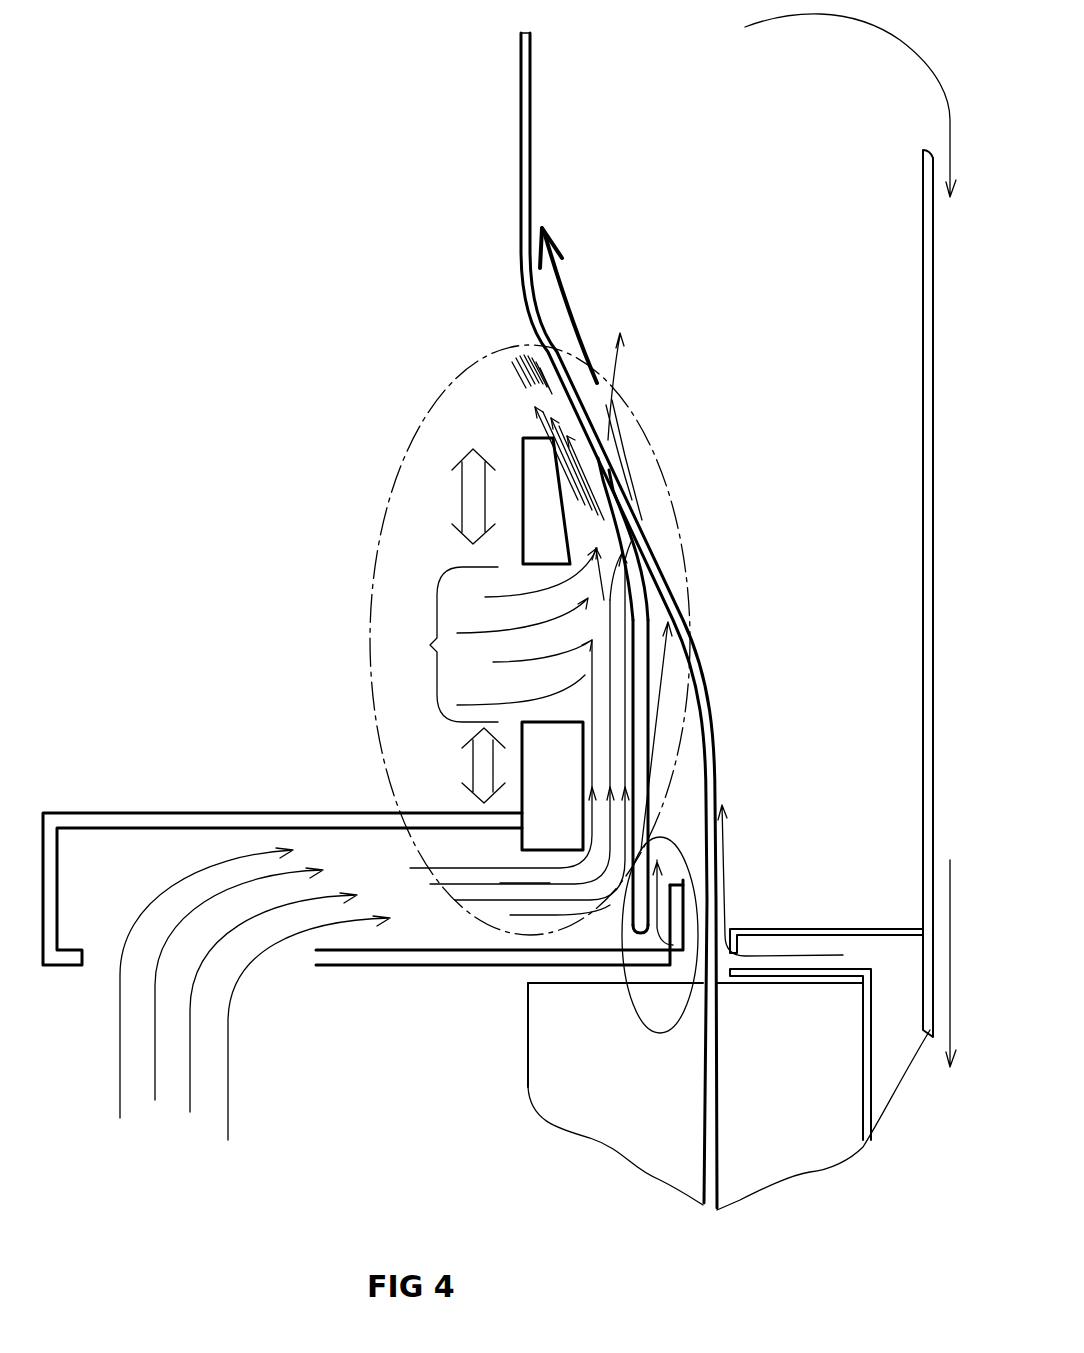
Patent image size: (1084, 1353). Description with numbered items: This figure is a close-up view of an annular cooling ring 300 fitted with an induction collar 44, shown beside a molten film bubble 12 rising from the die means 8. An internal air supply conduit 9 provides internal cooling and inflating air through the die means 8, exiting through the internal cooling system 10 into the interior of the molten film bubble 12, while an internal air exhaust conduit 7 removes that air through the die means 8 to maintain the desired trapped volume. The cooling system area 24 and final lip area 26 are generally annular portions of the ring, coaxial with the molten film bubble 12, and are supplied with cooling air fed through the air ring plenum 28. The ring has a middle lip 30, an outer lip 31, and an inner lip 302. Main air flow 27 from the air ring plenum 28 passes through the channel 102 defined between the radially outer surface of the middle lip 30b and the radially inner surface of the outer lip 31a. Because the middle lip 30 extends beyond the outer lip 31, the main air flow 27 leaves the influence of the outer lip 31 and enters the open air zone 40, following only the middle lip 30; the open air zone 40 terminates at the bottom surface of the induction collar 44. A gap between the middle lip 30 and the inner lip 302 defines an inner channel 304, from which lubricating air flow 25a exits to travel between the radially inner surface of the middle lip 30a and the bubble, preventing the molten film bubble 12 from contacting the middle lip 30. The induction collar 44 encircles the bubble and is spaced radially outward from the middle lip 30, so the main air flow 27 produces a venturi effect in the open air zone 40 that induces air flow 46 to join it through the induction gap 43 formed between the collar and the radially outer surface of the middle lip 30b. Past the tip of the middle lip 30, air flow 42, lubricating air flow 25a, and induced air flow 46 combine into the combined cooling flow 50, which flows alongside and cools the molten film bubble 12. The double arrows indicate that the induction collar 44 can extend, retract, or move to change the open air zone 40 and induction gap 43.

The annular cooling ring 300 is at (230, 640).
The internal air exhaust conduit 7 is at (923, 208).
The die means 8 is at (763, 1105).
The internal air supply conduit 9 is at (865, 1130).
The internal cooling system 10 is at (820, 943).
The molten film bubble 12 is at (710, 800).
The cooling system area 24 is at (628, 990).
The lubricating air flow 25a is at (650, 570).
The final lip area 26 is at (378, 510).
The main air flow 27 is at (605, 826).
The air ring plenum 28 is at (112, 855).
The middle lip 30 is at (641, 634).
The radially inner surface of the middle lip 30a is at (650, 755).
The radially outer surface of the middle lip 30b is at (636, 641).
The outer lip 31 is at (540, 830).
The radially inner surface of the outer lip 31a is at (605, 720).
The open air zone 40 is at (495, 635).
The air flow 42 is at (567, 440).
The induction gap 43 is at (600, 530).
The induction collar 44 is at (537, 455).
The induced air flow 46 is at (490, 630).
The combined cooling flow 50 is at (520, 355).
The channel 102 is at (603, 765).
The inner lip 302 is at (680, 910).
The inner channel 304 is at (655, 893).